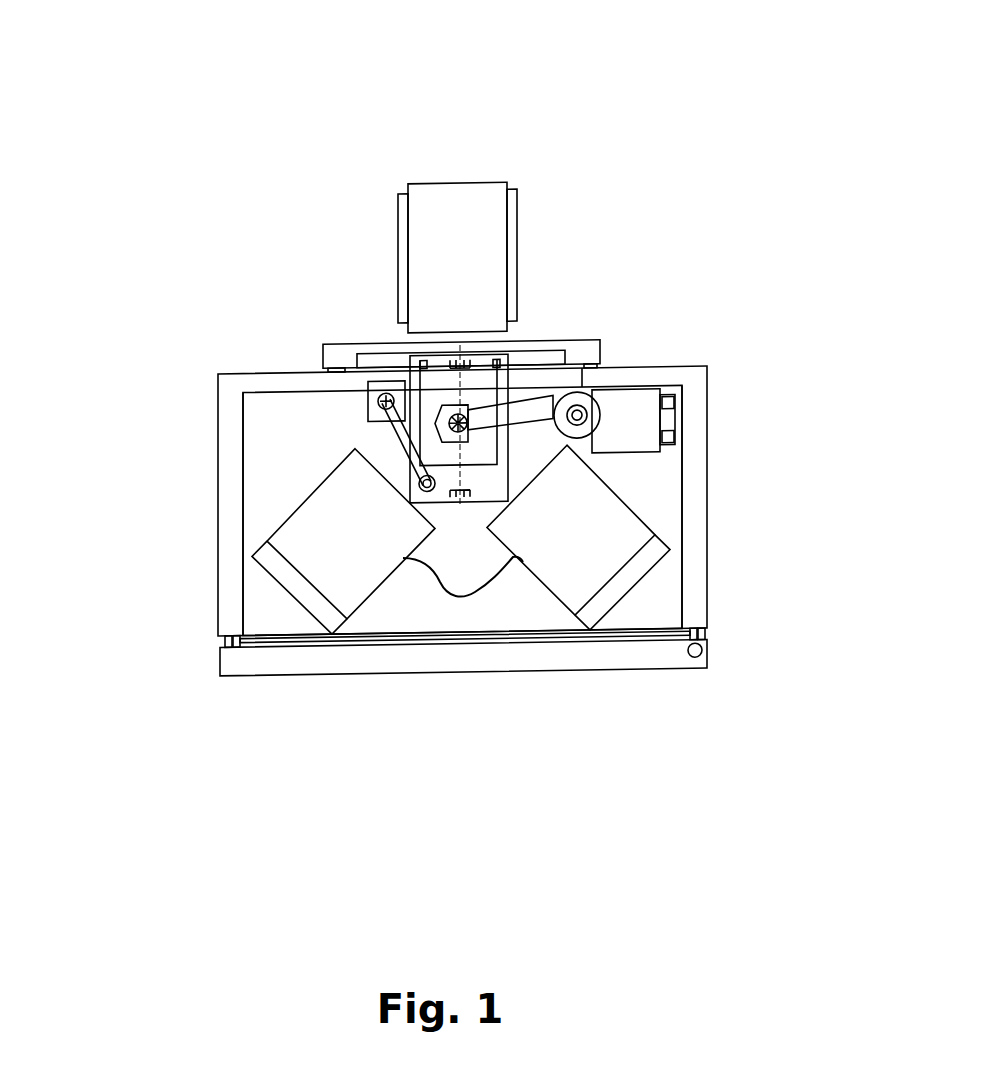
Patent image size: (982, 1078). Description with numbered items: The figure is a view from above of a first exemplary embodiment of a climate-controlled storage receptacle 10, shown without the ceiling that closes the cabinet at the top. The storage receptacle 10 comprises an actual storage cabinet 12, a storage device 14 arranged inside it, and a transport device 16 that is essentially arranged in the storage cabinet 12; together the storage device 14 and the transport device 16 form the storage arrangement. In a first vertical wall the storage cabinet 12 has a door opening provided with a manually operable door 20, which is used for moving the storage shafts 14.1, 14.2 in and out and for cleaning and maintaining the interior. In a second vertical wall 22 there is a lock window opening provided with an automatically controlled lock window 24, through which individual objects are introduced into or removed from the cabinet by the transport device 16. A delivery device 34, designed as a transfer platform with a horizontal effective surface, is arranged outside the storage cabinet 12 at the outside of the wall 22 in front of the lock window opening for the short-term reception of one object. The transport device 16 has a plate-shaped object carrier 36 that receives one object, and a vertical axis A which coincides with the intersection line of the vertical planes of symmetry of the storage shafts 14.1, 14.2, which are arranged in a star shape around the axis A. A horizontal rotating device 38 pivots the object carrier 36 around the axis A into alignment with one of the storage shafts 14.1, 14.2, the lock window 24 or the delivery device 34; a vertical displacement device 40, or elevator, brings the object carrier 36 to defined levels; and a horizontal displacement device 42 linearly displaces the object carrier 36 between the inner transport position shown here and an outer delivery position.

The storage receptacle 10 is at (893, 625).
The storage cabinet 12 is at (208, 528).
The storage device 14 is at (463, 589).
The storage shaft 14.1 is at (333, 562).
The storage shaft 14.2 is at (570, 575).
The transport device 16 is at (362, 432).
The door 20 is at (445, 653).
The second vertical wall 22 is at (686, 377).
The lock window 24 is at (580, 349).
The delivery device 34 is at (522, 240).
The object carrier 36 is at (441, 393).
The horizontal rotating device 38 is at (534, 422).
The vertical displacement device 40 is at (623, 418).
The horizontal displacement device 42 is at (387, 392).
The vertical axis A is at (461, 420).